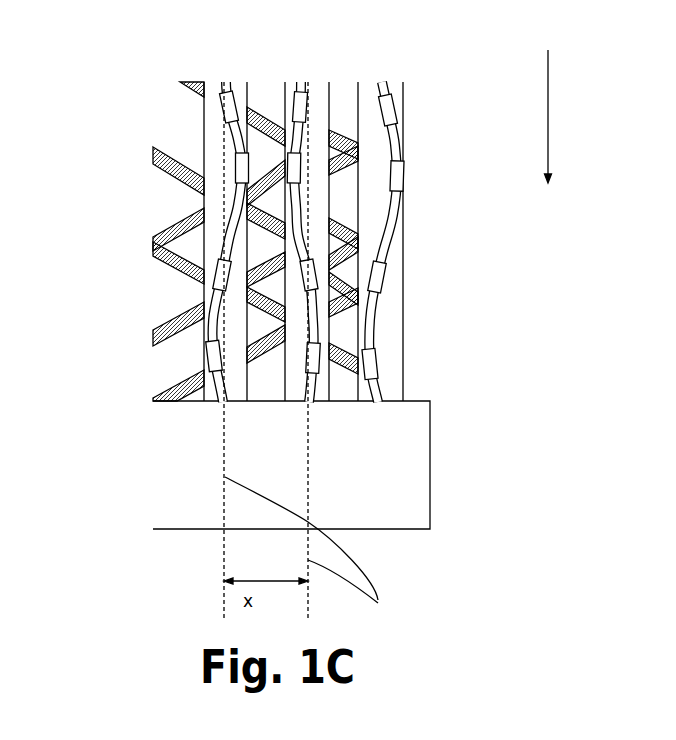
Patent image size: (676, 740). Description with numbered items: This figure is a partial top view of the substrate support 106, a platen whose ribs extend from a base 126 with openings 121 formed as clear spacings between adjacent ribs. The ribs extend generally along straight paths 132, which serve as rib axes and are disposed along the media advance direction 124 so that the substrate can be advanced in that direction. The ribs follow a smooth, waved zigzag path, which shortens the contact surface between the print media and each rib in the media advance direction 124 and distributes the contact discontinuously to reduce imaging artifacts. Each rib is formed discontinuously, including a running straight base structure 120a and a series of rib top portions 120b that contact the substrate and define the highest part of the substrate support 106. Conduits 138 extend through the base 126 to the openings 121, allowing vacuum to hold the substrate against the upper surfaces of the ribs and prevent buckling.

The substrate support 106 is at (118, 335).
The running straight base structure 120a is at (375, 77).
The rib top portions 120b is at (378, 352).
The openings 121 is at (288, 67).
The media advance direction 124 is at (548, 140).
The base 126 is at (204, 117).
The straight paths 132 is at (311, 555).
The conduits 138 is at (345, 198).